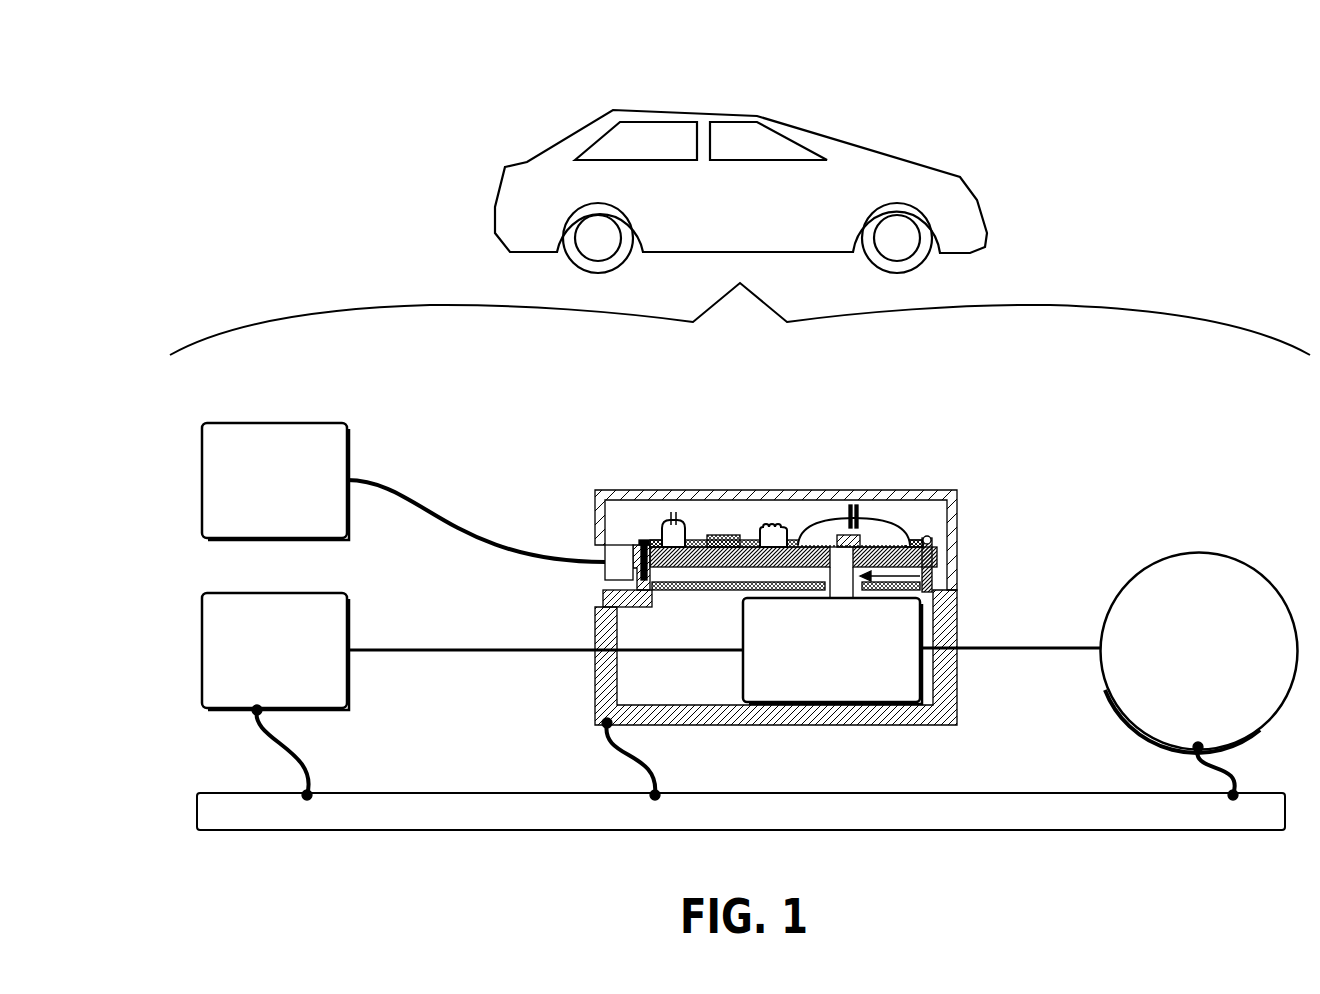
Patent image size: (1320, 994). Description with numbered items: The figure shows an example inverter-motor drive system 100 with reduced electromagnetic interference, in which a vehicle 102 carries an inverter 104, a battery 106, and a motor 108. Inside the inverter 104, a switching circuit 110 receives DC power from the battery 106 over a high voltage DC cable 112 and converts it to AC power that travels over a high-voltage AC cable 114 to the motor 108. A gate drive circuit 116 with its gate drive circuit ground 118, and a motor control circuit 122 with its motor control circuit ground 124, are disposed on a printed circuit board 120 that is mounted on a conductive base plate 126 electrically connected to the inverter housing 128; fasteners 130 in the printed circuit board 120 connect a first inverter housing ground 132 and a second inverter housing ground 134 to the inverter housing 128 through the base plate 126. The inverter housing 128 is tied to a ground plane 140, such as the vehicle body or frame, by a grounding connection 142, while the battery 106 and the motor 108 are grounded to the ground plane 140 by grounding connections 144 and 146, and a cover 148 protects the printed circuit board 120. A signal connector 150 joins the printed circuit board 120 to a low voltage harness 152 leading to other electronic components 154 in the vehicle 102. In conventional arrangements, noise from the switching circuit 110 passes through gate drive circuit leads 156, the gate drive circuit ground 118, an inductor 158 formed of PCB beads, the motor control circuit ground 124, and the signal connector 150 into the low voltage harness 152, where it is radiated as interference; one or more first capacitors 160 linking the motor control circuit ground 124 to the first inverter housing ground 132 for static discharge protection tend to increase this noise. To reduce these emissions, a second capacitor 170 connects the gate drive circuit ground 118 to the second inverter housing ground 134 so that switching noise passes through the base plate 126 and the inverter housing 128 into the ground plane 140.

The inverter-motor drive system 100 is at (94, 38).
The vehicle 102 is at (757, 116).
The inverter 104 is at (688, 420).
The battery 106 is at (289, 671).
The motor 108 is at (1215, 674).
The switching circuit 110 is at (848, 676).
The high voltage DC (HVDC) cable 112 is at (527, 655).
The high-voltage AC (HVAC) cable 114 is at (1075, 653).
The gate drive circuit 116 is at (927, 540).
The gate drive circuit ground 118 is at (823, 543).
The printed circuit board 120 is at (935, 558).
The motor control circuit 122 is at (733, 537).
The motor control circuit ground 124 is at (693, 543).
The base plate 126 is at (595, 602).
The inverter housing 128 is at (957, 697).
The fasteners 130 is at (648, 543).
The first inverter housing ground 132 is at (657, 542).
The second inverter housing ground 134 is at (937, 538).
The ground plane 140 is at (809, 822).
The grounding connection 142 is at (648, 768).
The grounding connection 144 is at (295, 752).
The grounding connection 146 is at (1237, 772).
The cover 148 is at (957, 490).
The signal connector 150 is at (605, 572).
The low voltage (LV) harness 152 is at (372, 482).
The other electronic components 154 is at (290, 519).
The gate drive circuit leads 156 is at (938, 575).
The inductor 158 is at (777, 527).
The first capacitors 160 is at (672, 515).
The second capacitor 170 is at (860, 533).